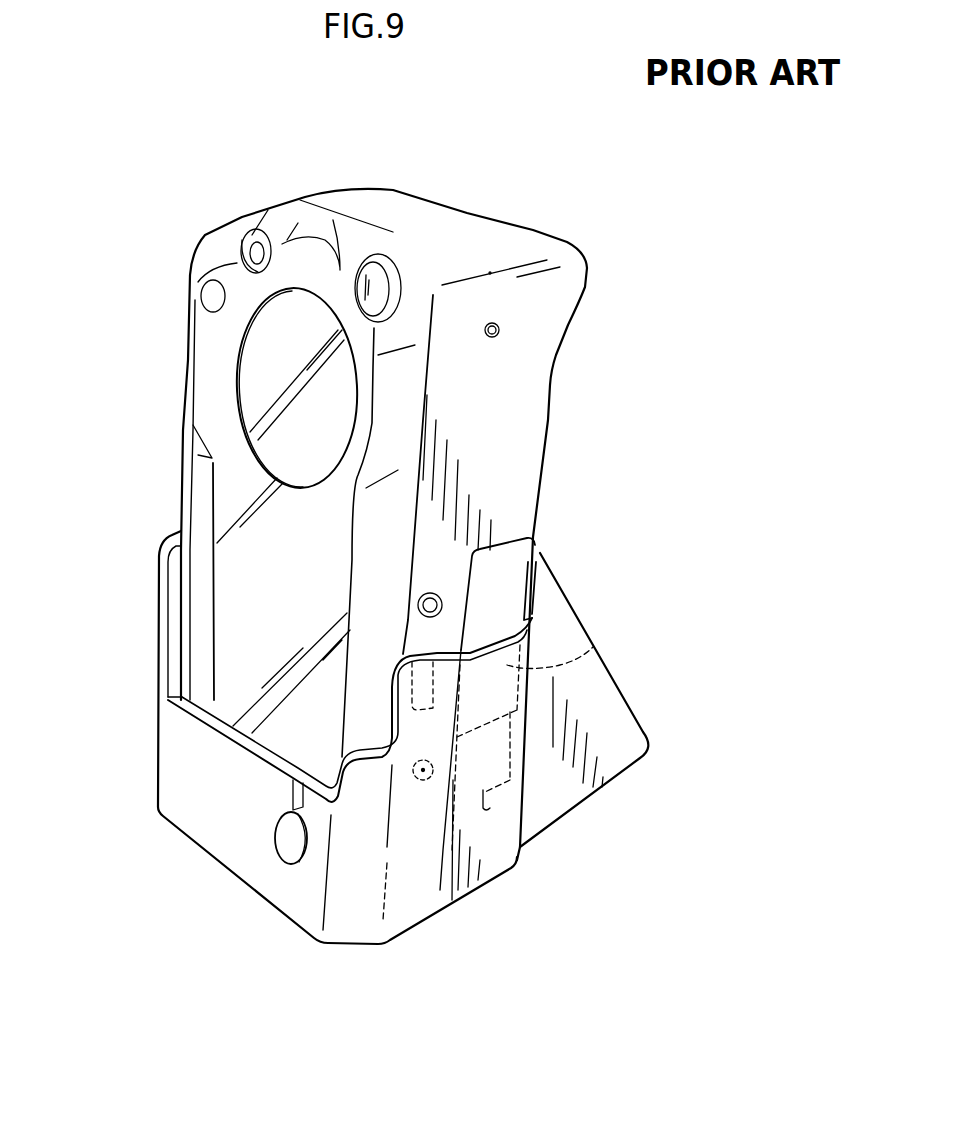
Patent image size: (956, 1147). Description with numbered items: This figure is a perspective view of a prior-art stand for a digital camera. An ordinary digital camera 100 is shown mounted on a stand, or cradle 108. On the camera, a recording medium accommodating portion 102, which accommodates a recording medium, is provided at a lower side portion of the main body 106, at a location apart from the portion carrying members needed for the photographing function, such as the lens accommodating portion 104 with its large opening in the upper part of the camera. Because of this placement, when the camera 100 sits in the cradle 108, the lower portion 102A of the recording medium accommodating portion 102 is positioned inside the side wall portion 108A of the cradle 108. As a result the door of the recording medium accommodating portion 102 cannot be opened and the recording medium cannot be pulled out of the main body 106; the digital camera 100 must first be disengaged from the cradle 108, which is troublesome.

The digital camera 100 is at (570, 217).
The recording medium accommodating portion 102 is at (516, 580).
The lower portion of the recording medium accommodating portion 102A is at (595, 648).
The lens accommodating portion 104 is at (265, 388).
The main body 106 is at (532, 383).
The stand (cradle) 108 is at (148, 819).
The side wall portion 108A is at (520, 643).